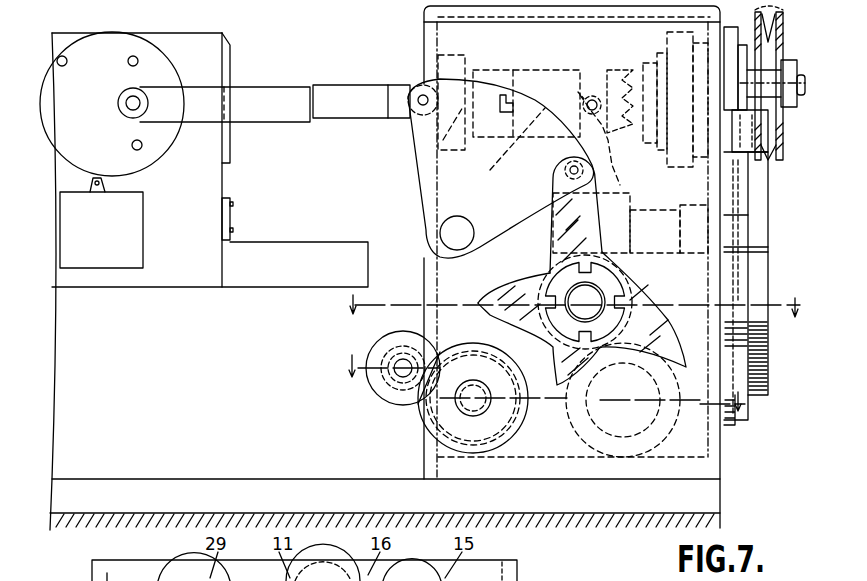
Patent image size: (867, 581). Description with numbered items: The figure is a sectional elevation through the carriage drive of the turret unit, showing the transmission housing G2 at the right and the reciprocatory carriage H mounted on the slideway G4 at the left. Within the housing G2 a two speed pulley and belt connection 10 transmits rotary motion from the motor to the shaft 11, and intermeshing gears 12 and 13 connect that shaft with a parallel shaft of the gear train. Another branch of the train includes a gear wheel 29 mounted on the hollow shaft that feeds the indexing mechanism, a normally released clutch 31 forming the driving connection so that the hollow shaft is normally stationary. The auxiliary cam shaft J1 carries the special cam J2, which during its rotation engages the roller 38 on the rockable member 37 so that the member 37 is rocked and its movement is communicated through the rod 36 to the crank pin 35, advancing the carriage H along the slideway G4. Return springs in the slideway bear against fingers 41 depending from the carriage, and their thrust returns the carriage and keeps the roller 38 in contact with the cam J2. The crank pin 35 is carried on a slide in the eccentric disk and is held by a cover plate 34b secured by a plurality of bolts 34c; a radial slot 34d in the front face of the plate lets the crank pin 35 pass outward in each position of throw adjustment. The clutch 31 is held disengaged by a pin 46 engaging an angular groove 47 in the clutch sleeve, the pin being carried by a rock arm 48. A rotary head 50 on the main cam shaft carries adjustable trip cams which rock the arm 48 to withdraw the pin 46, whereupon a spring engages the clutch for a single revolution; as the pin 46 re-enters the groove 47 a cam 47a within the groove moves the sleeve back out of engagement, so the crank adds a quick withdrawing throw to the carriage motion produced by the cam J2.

The two speed pulley and belt connection 10 is at (781, 8).
The shaft 11 is at (798, 72).
The gear 12 is at (544, 394).
The gear 13 is at (576, 308).
The gear wheel 29 is at (677, 150).
The clutch 31 is at (630, 70).
The cover plate 34b is at (138, 158).
The bolts 34c is at (137, 57).
The radial slot 34d is at (118, 100).
The crank pin 35 is at (130, 108).
The rod 36 is at (267, 108).
The rockable member 37 is at (440, 180).
The roller 38 is at (571, 171).
The fingers 41 is at (223, 220).
The pin 46 is at (578, 92).
The angular groove 47 is at (592, 96).
The cam 47a is at (588, 100).
The rock arm 48 is at (573, 162).
The rotary head 50 is at (770, 360).
The transmission housing G2 is at (423, 46).
The slideway G4 is at (327, 247).
The carriage H is at (223, 34).
The auxiliary cam shaft J1 is at (588, 303).
The special cam J2 is at (507, 292).